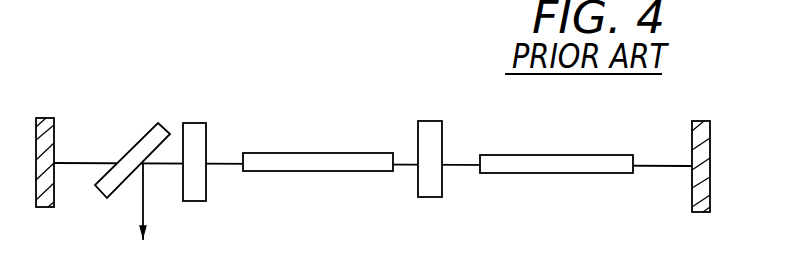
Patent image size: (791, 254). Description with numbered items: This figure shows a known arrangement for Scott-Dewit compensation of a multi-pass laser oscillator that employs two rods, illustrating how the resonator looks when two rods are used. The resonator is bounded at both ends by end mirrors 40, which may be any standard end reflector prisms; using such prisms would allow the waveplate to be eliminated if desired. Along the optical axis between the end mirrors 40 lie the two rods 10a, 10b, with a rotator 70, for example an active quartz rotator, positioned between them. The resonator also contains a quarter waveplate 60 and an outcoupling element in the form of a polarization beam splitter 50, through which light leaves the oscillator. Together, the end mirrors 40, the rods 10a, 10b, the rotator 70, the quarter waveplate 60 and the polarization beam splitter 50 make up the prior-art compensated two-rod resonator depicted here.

The end mirror 40 is at (43, 117).
The polarization beam splitter 50 is at (157, 121).
The quarter waveplate 60 is at (195, 122).
The rotator 70 is at (430, 120).
The rod 10a is at (318, 152).
The rod 10b is at (557, 153).